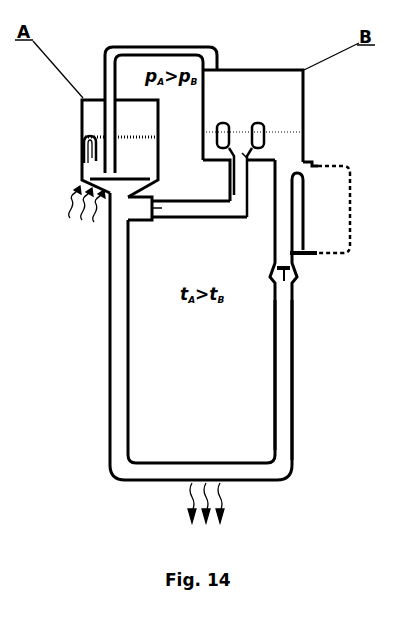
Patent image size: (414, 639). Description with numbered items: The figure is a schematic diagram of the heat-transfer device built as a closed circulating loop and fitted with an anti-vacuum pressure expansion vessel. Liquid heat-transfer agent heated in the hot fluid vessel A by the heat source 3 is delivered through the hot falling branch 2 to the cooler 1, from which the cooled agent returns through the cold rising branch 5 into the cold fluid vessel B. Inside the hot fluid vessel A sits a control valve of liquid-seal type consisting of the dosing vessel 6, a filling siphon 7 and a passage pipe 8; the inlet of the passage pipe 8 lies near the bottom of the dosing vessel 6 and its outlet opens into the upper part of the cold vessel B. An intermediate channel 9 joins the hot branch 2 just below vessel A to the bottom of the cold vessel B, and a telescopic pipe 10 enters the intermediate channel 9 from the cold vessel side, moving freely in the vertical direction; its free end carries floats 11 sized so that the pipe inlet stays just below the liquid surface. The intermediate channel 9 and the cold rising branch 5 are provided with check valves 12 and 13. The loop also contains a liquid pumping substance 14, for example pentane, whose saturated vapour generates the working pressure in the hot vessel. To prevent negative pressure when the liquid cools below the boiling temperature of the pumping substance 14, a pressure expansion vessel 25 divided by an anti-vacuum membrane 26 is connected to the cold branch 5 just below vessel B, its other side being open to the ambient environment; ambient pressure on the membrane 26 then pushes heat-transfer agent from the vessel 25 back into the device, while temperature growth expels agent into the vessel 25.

The cooler 1 is at (225, 500).
The hot falling branch 2 is at (108, 377).
The heat source 3 is at (78, 204).
The cold rising branch 5 is at (292, 392).
The dosing vessel 6 is at (88, 165).
The filling siphon 7 is at (88, 137).
The passage pipe 8 is at (105, 65).
The intermediate channel 9 is at (197, 217).
The telescopic pipe 10 is at (233, 178).
The floats 11 is at (264, 123).
The check valve 12 is at (132, 220).
The check valve 13 is at (295, 273).
The liquid pumping substance 14 is at (82, 138).
The pressure expansion vessel 25 is at (337, 228).
The anti-vacuum membrane 26 is at (350, 170).